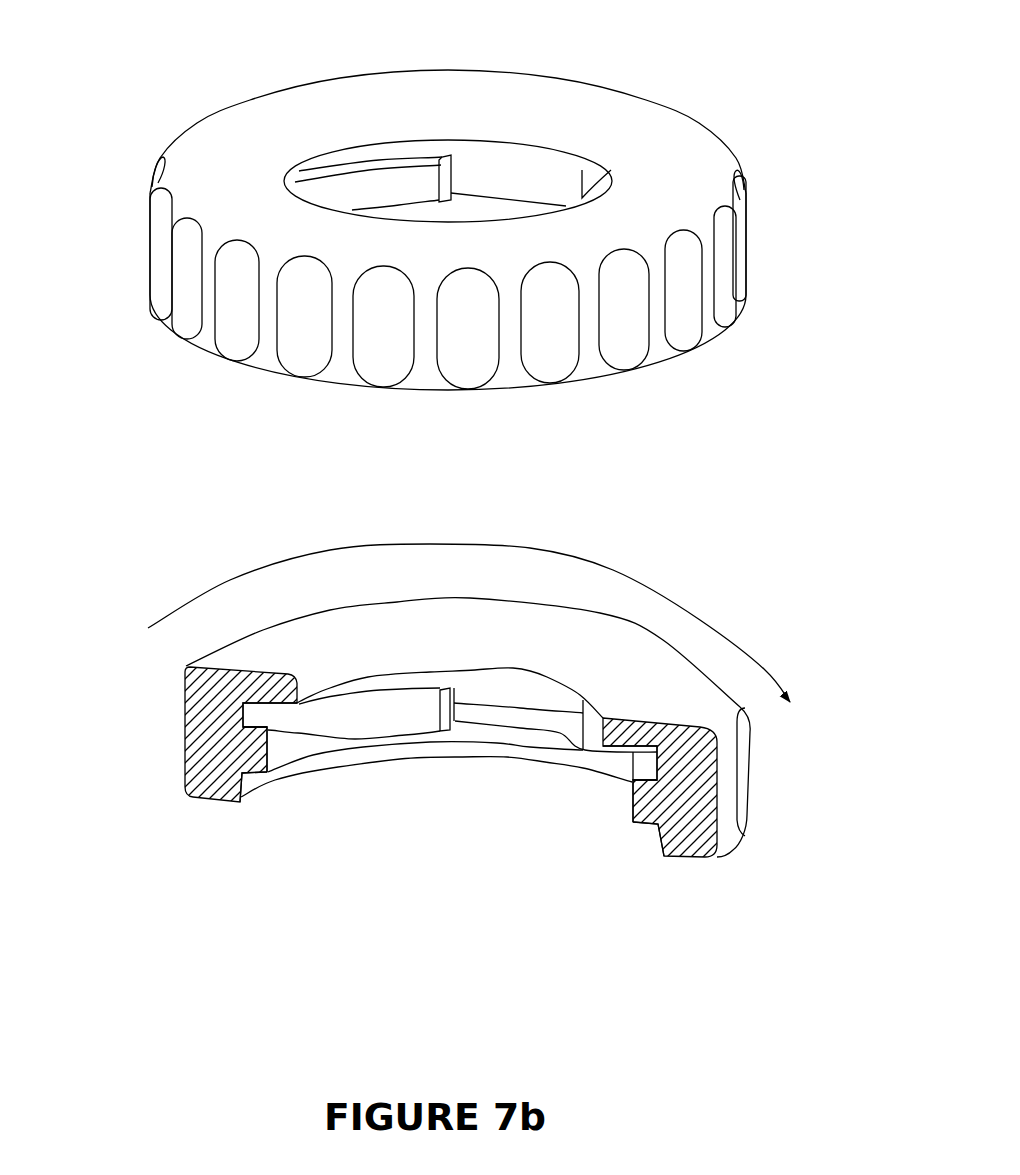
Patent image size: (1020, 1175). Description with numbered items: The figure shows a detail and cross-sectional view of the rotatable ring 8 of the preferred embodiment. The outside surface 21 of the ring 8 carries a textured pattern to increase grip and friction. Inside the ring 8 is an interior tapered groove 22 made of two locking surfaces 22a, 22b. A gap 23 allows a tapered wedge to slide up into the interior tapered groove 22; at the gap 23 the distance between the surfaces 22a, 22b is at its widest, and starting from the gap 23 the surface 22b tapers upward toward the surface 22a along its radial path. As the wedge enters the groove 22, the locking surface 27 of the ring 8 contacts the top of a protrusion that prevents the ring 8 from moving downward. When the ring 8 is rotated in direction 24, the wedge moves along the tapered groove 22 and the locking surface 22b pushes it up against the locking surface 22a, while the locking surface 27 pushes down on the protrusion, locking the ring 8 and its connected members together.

The ring 8 is at (227, 173).
The outside surface 21 is at (623, 320).
The interior tapered groove 22 is at (250, 711).
The locking surface 22a is at (264, 710).
The locking surface 22b is at (272, 719).
The gap 23 is at (513, 712).
The direction 24 is at (481, 641).
The locking surface 27 is at (248, 777).